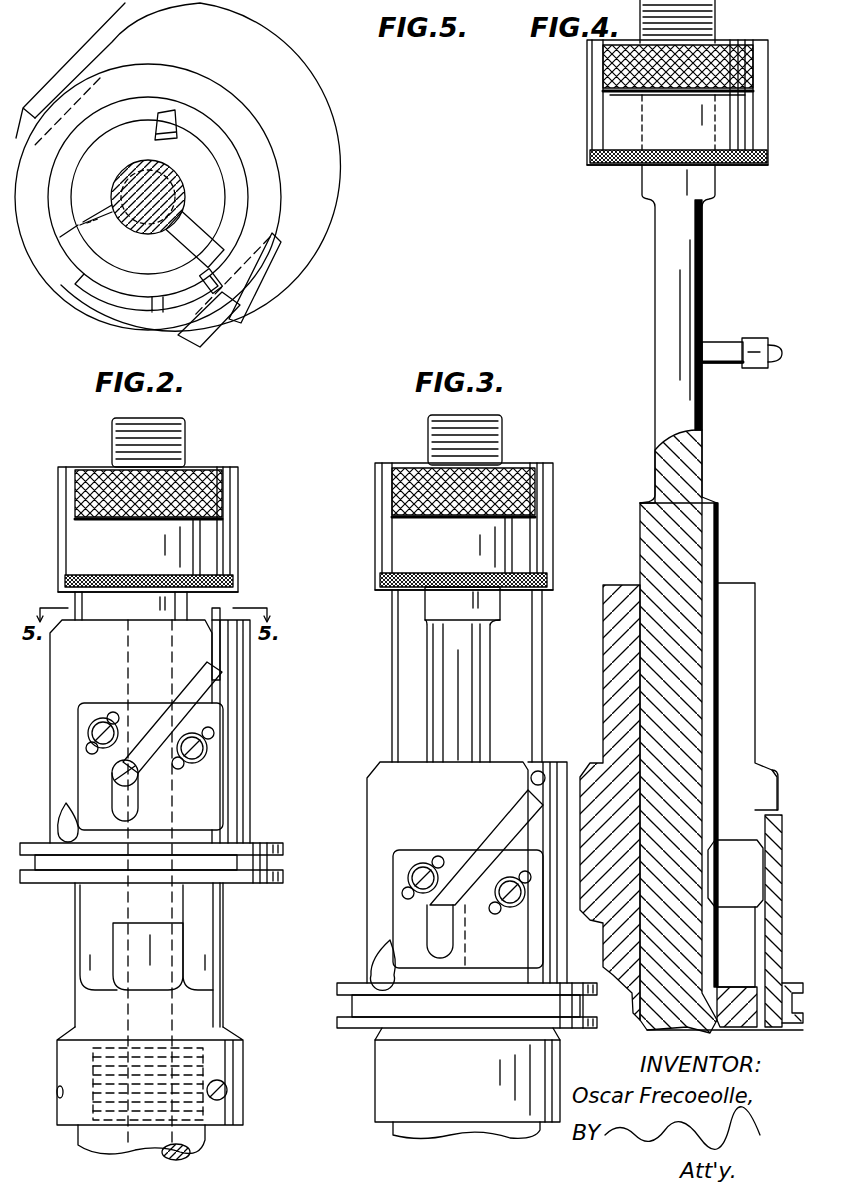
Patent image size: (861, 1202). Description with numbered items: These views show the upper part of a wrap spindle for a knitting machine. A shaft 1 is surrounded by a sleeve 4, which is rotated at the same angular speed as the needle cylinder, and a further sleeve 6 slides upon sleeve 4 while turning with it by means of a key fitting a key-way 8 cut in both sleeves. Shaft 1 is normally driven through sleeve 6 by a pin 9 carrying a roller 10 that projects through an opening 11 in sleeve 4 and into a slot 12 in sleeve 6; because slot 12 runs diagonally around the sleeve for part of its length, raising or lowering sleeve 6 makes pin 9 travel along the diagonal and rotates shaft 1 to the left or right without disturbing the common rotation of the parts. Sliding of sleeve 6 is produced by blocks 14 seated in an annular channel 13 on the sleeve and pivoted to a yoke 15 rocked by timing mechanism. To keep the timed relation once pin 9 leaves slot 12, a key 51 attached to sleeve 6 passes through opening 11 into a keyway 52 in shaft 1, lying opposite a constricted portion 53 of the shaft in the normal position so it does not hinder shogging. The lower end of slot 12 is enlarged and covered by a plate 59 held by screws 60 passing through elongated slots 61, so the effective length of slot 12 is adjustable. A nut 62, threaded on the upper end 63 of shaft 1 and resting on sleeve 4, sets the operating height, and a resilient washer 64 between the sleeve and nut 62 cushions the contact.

In FIG. 5, the shaft 1 is at (178, 118).
In FIG. 4, the shaft 1 is at (655, 240).
In FIG. 2, the shaft 1 is at (190, 1150).
In FIG. 3, the shaft 1 is at (440, 602).
In FIG. 4, the sleeve 4 is at (755, 630).
In FIG. 2, the sleeve 4 is at (210, 990).
In FIG. 3, the sleeve 4 is at (535, 692).
In FIG. 5, the sleeve 6 is at (232, 167).
In FIG. 4, the sleeve 6 is at (780, 810).
In FIG. 2, the sleeve 6 is at (237, 750).
In FIG. 3, the sleeve 6 is at (370, 840).
In FIG. 5, the key-way 8 is at (157, 137).
In FIG. 4, the pin 9 is at (722, 345).
In FIG. 2, the pin 9 is at (128, 783).
In FIG. 3, the pin 9 is at (540, 770).
In FIG. 4, the roller 10 is at (760, 335).
In FIG. 4, the opening 11 is at (735, 692).
In FIG. 2, the opening 11 is at (200, 600).
In FIG. 3, the opening 11 is at (400, 692).
In FIG. 4, the slot 12 is at (762, 768).
In FIG. 2, the slot 12 is at (213, 683).
In FIG. 3, the slot 12 is at (492, 842).
In FIG. 4, the annular channel 13 is at (782, 990).
In FIG. 2, the annular channel 13 is at (265, 862).
In FIG. 3, the annular channel 13 is at (350, 1007).
In FIG. 5, the blocks 14 is at (110, 72).
In FIG. 5, the yoke 15 is at (352, 160).
In FIG. 4, the key 51 is at (735, 873).
In FIG. 4, the keyway 52 is at (712, 530).
In FIG. 4, the constricted portion 53 is at (655, 280).
In FIG. 3, the constricted portion 53 is at (488, 652).
In FIG. 2, the plate 59 is at (88, 768).
In FIG. 3, the plate 59 is at (395, 883).
In FIG. 2, the screws 60 is at (97, 718).
In FIG. 3, the screws 60 is at (418, 865).
In FIG. 2, the elongated slots 61 is at (112, 713).
In FIG. 3, the elongated slots 61 is at (436, 860).
In FIG. 4, the nut 62 is at (716, 46).
In FIG. 2, the nut 62 is at (200, 470).
In FIG. 3, the nut 62 is at (420, 472).
In FIG. 4, the upper end 63 is at (715, 13).
In FIG. 2, the upper end 63 is at (178, 423).
In FIG. 3, the upper end 63 is at (435, 430).
In FIG. 4, the washer 64 is at (737, 165).
In FIG. 2, the washer 64 is at (228, 575).
In FIG. 3, the washer 64 is at (410, 575).